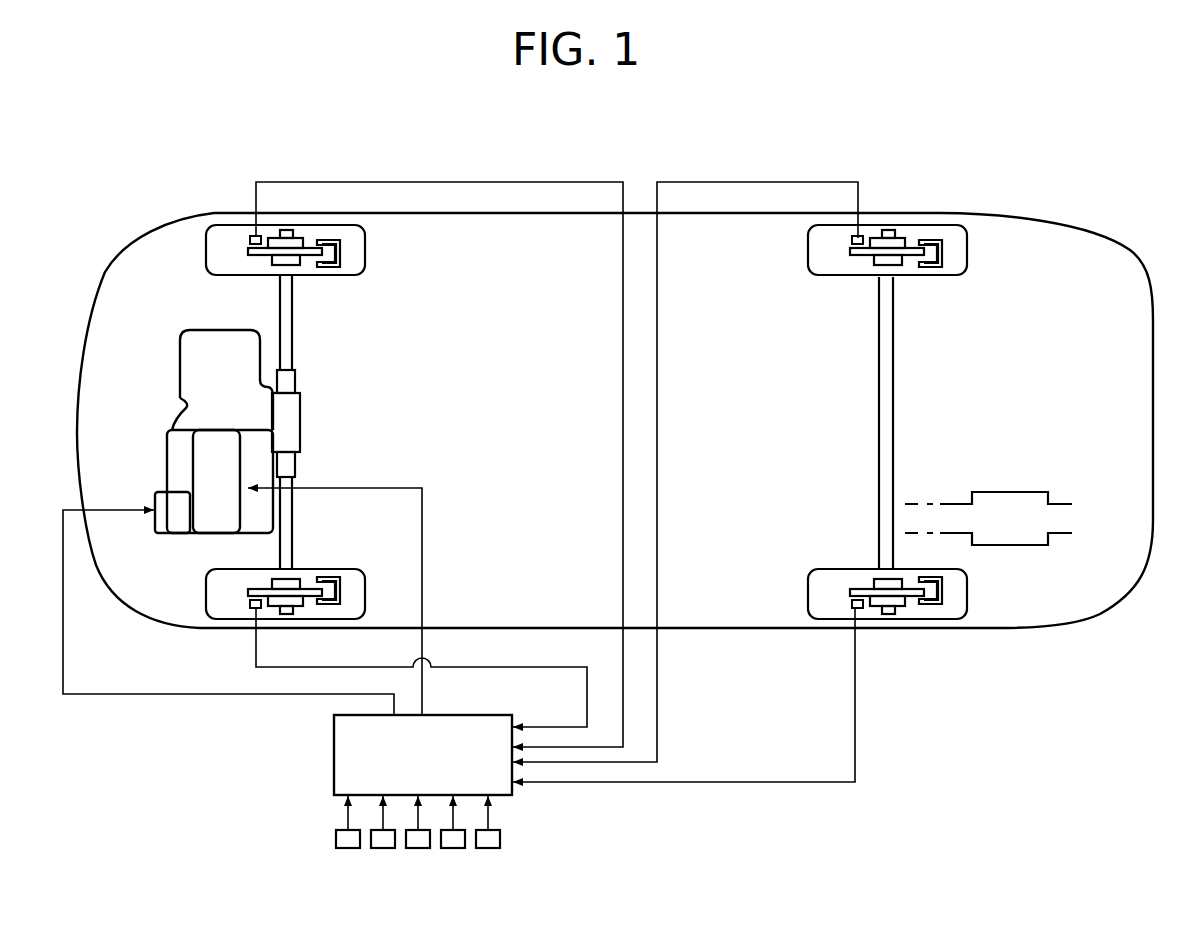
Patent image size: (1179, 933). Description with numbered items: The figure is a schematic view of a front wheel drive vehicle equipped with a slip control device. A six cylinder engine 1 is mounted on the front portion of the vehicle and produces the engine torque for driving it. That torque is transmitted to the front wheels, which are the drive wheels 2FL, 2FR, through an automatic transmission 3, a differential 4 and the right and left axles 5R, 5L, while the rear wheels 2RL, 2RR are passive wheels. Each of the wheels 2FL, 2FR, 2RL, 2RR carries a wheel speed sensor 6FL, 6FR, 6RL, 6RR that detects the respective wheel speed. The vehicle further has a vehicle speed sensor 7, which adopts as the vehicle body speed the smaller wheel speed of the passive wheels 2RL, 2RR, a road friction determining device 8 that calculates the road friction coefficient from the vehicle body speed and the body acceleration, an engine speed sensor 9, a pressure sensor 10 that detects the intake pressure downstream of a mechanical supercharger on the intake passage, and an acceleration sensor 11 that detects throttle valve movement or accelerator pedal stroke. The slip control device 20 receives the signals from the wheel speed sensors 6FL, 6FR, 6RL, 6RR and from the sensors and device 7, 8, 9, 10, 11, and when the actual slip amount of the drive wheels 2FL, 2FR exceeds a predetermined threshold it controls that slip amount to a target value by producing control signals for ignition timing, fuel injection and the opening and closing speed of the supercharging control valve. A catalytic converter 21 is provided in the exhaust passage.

The engine 1 is at (187, 458).
The automatic transmission 3 is at (182, 372).
The differential 4 is at (293, 424).
The right axle 5R is at (293, 322).
The left axle 5L is at (290, 547).
The front right wheel 2FR is at (205, 250).
The front left wheel 2FL is at (205, 597).
The rear right wheel 2RR is at (967, 243).
The rear left wheel 2RL is at (967, 597).
The wheel speed sensor 6FR is at (250, 237).
The wheel speed sensor 6FL is at (248, 605).
The wheel speed sensor 6RR is at (863, 237).
The wheel speed sensor 6RL is at (859, 607).
The slip control device 20 is at (334, 784).
The catalytic converter 21 is at (1018, 492).
The vehicle speed sensor 7 is at (345, 848).
The road friction determining device 8 is at (380, 848).
The engine speed sensor 9 is at (415, 848).
The pressure sensor 10 is at (450, 848).
The acceleration sensor 11 is at (485, 848).